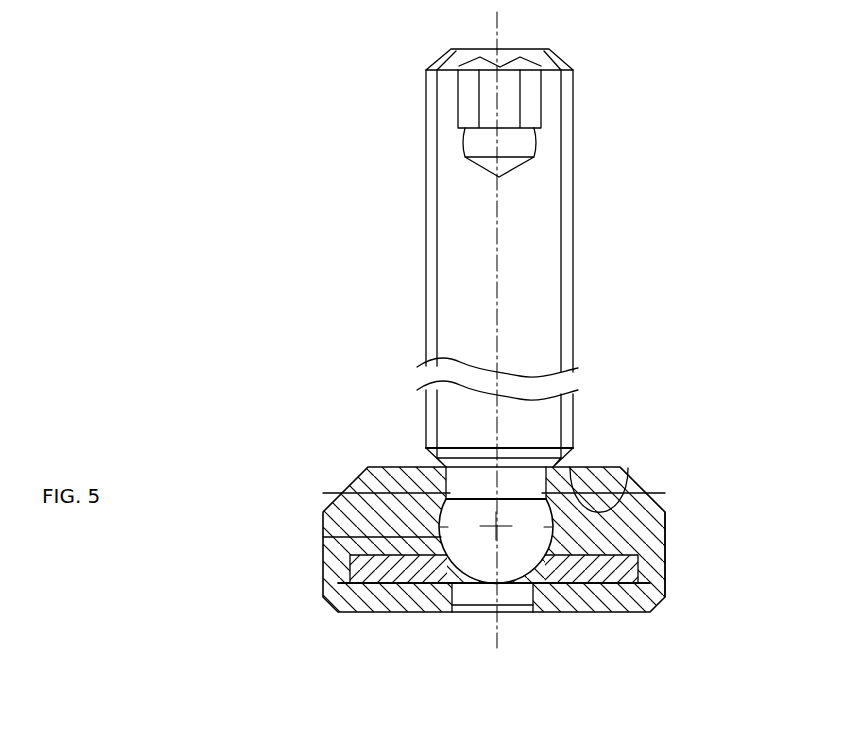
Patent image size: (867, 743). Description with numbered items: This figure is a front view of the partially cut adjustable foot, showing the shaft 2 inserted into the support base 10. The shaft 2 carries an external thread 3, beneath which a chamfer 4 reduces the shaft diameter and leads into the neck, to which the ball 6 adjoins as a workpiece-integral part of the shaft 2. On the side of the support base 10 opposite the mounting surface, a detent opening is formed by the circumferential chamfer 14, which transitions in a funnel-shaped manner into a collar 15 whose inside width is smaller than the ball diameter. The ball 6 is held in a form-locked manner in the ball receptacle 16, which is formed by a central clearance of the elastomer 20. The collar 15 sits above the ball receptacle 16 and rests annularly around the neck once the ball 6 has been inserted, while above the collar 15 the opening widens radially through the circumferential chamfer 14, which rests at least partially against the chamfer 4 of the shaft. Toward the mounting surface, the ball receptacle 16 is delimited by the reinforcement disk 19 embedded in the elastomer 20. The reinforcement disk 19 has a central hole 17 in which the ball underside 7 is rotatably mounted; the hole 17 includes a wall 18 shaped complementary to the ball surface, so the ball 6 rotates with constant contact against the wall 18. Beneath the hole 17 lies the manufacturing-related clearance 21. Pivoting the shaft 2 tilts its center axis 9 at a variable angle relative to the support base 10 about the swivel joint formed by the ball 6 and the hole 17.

The shaft 2 is at (537, 217).
The thread 3 is at (573, 157).
The chamfer 4 is at (422, 456).
The ball 6 is at (470, 553).
The ball underside 7 is at (513, 612).
The center axis 9 is at (499, 293).
The support base 10 is at (649, 497).
The circumferential chamfer 14 is at (593, 467).
The collar 15 is at (635, 483).
The ball receptacle 16 is at (345, 490).
The hole 17 is at (462, 613).
The wall 18 is at (572, 612).
The reinforcement disk 19 is at (650, 612).
The elastomer 20 is at (668, 507).
The clearance 21 is at (487, 612).